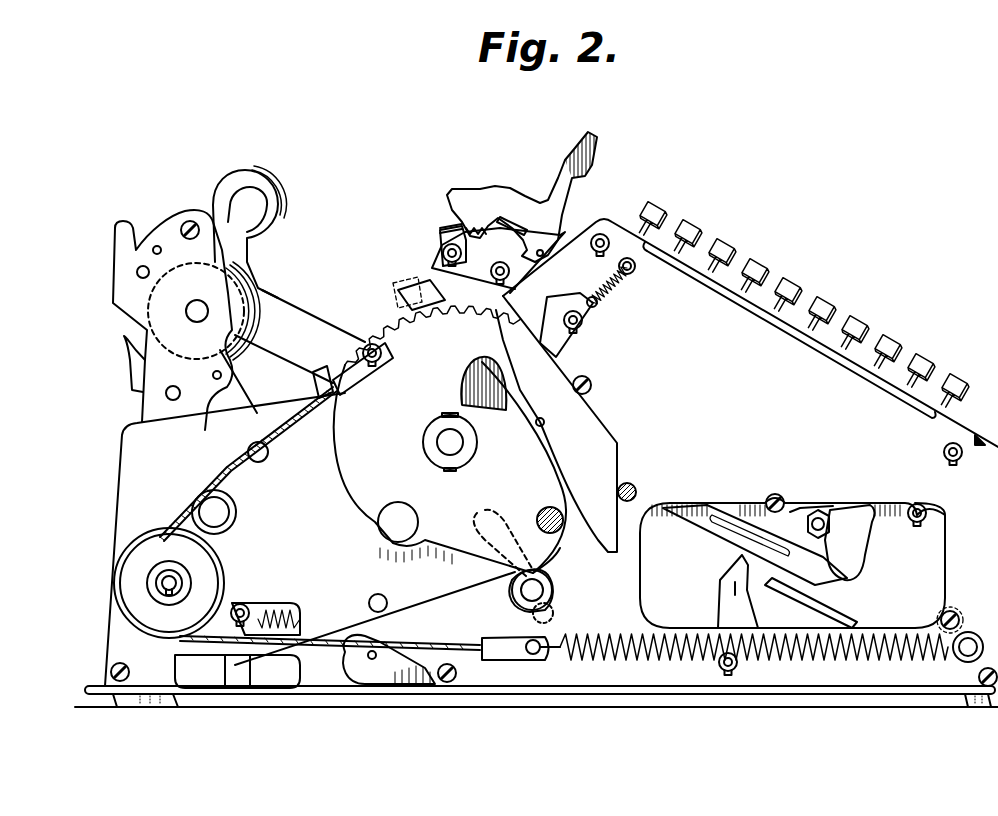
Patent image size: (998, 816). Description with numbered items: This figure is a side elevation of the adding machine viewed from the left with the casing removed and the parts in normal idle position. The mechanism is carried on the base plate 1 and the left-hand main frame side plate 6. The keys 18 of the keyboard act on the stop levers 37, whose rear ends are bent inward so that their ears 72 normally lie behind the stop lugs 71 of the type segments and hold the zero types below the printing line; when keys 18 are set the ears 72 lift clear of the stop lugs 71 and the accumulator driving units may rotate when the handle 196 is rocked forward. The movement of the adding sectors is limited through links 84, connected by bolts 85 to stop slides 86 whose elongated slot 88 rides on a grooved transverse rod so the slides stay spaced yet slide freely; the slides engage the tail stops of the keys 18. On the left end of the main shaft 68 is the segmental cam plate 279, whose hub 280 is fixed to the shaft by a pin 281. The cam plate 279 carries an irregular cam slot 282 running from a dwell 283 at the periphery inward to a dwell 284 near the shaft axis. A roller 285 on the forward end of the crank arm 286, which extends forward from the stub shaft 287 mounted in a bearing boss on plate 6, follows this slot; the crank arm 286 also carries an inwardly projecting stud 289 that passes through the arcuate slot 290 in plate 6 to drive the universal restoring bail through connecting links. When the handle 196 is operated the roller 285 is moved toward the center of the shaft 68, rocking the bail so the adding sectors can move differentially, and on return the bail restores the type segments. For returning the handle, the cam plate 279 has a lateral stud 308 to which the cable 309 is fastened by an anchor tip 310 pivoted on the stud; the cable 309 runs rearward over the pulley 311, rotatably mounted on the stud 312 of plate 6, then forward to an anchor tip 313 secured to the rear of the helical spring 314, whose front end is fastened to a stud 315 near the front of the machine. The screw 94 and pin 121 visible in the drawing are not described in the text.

The base plate 1 is at (591, 664).
The main frame side plate 6 is at (128, 480).
The keys 18 is at (760, 265).
The stop levers 37 is at (427, 288).
The main shaft 68 is at (437, 441).
The stop lugs 71 is at (386, 312).
The ears 72 is at (405, 298).
The links 84 is at (713, 530).
The bolts 85 is at (832, 528).
The stop slides 86 is at (853, 562).
The elongated slot 88 is at (800, 508).
The stop screw 94 is at (950, 608).
The pin 121 is at (370, 600).
The handle 196 is at (272, 290).
The segmental cam plate 279 is at (387, 452).
The hub 280 is at (465, 456).
The pin 281 is at (447, 414).
The cam slot 282 is at (545, 423).
The dwell 283 is at (556, 556).
The dwell 284 is at (512, 345).
The roller 285 is at (552, 591).
The crank arm 286 is at (471, 606).
The stub shaft 287 is at (365, 657).
The stud 289 is at (553, 616).
The arcuate slot 290 is at (523, 548).
The stud 308 is at (385, 356).
The cable 309 is at (240, 454).
The anchor tip 310 is at (366, 383).
The pulley 311 is at (197, 566).
The stud 312 is at (176, 584).
The anchor tip 313 is at (506, 652).
The helical spring 314 is at (754, 657).
The stud 315 is at (963, 648).